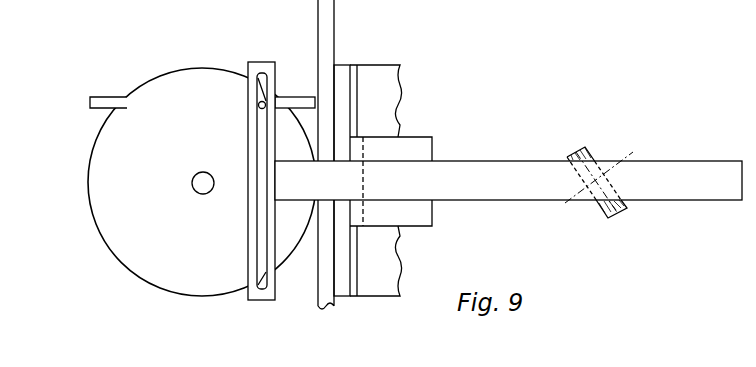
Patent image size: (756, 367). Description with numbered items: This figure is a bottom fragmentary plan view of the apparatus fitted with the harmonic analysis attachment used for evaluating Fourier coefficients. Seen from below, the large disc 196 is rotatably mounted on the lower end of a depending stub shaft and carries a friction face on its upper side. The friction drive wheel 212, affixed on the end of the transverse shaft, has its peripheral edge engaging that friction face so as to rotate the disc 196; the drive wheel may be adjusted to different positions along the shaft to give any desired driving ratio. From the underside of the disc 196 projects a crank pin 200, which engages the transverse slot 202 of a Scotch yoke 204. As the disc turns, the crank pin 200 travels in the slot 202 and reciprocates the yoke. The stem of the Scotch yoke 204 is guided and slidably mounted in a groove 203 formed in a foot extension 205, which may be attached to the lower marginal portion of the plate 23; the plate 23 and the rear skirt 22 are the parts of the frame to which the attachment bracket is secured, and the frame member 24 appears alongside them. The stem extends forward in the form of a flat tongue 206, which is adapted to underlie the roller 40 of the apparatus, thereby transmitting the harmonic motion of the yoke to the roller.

The disc 196 is at (193, 71).
The friction drive wheel 212 is at (97, 97).
The crank pin 200 is at (266, 103).
The transverse slot 202 is at (264, 286).
The Scotch yoke 204 is at (262, 301).
The frame bar 24 is at (330, 15).
The plate 23 is at (343, 67).
The rear skirt 22 is at (362, 56).
The groove 203 is at (412, 160).
The foot extension 205 is at (417, 222).
The flat tongue 206 is at (482, 196).
The roller 40 is at (587, 147).